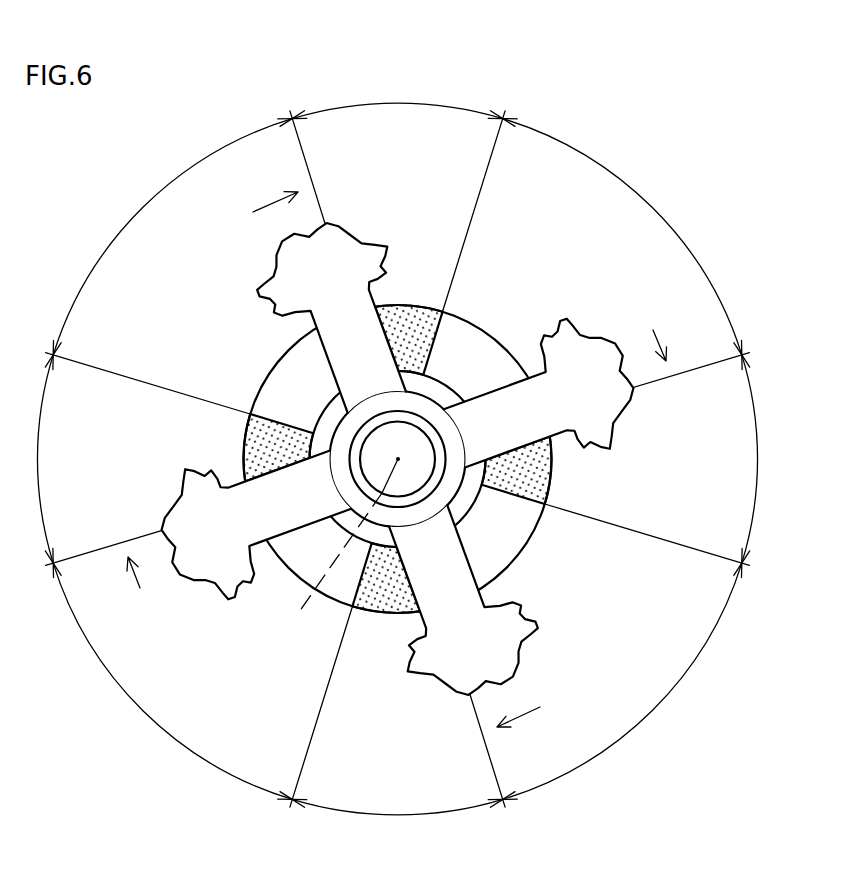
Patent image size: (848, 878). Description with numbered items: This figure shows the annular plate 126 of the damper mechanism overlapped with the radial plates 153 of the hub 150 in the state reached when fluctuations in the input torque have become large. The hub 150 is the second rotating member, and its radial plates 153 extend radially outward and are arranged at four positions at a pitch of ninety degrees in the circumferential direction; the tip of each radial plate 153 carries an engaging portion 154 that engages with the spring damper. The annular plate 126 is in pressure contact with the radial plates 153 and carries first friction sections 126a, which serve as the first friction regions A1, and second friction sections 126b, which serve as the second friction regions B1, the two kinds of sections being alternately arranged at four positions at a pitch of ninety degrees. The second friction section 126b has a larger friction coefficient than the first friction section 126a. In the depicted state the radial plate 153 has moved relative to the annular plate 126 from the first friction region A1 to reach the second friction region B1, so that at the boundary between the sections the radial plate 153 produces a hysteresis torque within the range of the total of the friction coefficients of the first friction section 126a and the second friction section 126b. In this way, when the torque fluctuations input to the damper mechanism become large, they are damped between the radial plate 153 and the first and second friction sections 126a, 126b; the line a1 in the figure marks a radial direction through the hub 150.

The annular plate 126 is at (446, 444).
The first friction section 126a is at (516, 540).
The second friction section 126b is at (557, 484).
The hub 150 is at (442, 458).
The radial plate 153 is at (452, 566).
The engaging portion 154 is at (295, 272).
The axis a1 is at (340, 551).
The first friction region A1 is at (397, 459).
The second friction region B1 is at (399, 464).